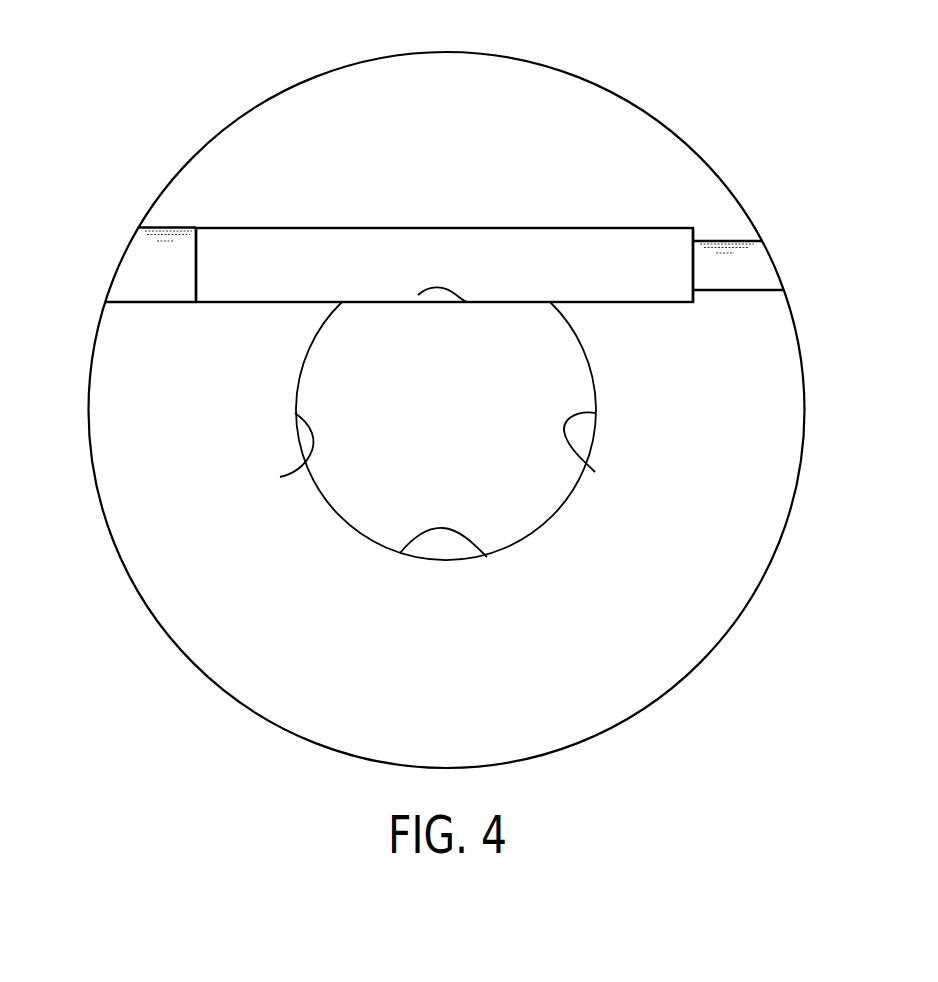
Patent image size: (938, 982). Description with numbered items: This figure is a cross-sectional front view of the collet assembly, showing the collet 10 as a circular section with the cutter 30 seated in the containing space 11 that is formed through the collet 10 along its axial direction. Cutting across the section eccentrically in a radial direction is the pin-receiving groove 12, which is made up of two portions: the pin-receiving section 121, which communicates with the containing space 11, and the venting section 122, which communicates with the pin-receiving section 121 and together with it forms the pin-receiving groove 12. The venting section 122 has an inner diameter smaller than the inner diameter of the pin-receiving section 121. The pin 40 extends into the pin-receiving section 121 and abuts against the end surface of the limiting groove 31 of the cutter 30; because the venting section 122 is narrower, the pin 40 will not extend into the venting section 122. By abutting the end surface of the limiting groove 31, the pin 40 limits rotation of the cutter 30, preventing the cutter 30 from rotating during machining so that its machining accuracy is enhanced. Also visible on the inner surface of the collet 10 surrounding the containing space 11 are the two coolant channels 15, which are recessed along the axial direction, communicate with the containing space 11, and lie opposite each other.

The collet 10 is at (688, 672).
The containing space 11 is at (487, 557).
The pin-receiving groove 12 is at (130, 242).
The pin-receiving section 121 is at (140, 301).
The venting section 122 is at (752, 290).
The coolant channels 15 is at (280, 477).
The cutter 30 is at (573, 345).
The limiting groove 31 is at (418, 295).
The pin 40 is at (427, 228).